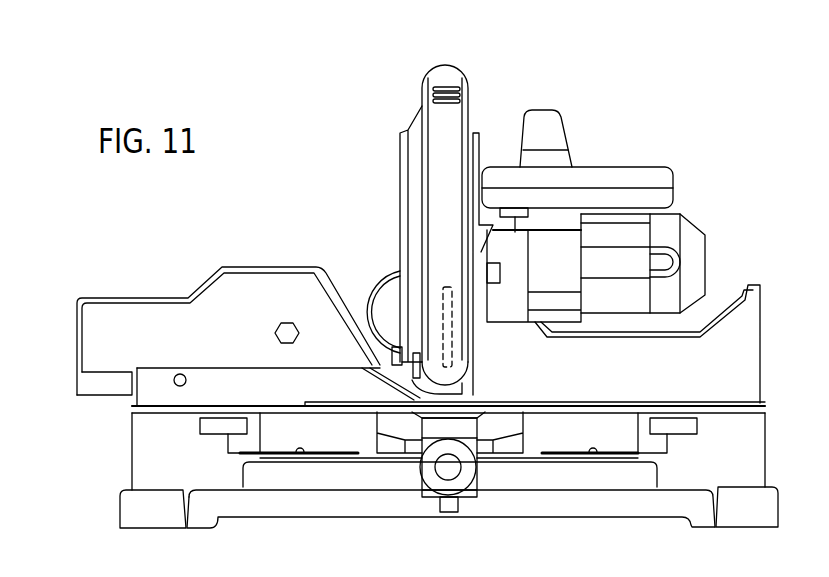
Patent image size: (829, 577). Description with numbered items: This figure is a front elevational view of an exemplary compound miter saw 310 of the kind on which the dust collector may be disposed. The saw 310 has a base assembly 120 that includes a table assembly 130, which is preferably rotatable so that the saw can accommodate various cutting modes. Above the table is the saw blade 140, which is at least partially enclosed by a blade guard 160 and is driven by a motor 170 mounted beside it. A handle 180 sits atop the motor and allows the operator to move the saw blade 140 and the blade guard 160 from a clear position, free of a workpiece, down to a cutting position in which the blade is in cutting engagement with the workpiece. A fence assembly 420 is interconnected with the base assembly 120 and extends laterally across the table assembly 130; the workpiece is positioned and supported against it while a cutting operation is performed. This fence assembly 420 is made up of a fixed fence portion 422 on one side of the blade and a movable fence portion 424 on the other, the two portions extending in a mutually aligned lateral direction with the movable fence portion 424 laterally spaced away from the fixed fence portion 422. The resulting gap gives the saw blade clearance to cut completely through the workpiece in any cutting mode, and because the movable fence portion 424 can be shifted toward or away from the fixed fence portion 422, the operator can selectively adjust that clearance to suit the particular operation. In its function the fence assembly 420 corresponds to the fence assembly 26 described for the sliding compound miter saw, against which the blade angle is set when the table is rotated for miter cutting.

The fence assembly 26 is at (152, 401).
The base assembly 120 is at (757, 427).
The table assembly 130 is at (597, 396).
The saw blade 140 is at (452, 352).
The blade guard 160 is at (444, 70).
The motor 170 is at (689, 231).
The handle 180 is at (642, 173).
The compound miter saw 310 is at (66, 338).
The fence assembly 420 is at (113, 274).
The fixed fence portion 422 is at (708, 352).
The movable fence portion 424 is at (115, 323).